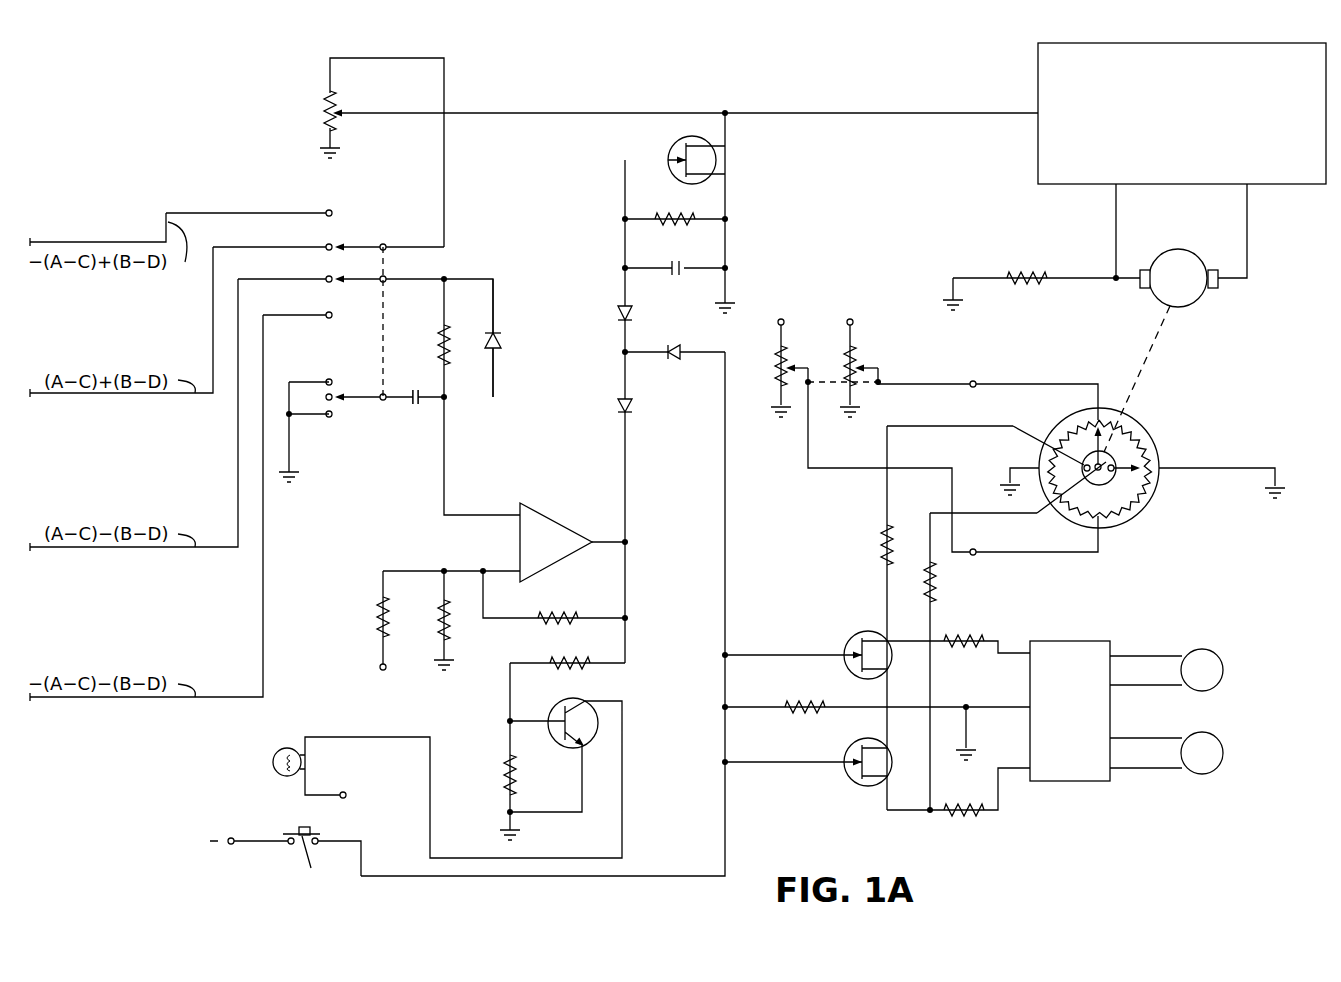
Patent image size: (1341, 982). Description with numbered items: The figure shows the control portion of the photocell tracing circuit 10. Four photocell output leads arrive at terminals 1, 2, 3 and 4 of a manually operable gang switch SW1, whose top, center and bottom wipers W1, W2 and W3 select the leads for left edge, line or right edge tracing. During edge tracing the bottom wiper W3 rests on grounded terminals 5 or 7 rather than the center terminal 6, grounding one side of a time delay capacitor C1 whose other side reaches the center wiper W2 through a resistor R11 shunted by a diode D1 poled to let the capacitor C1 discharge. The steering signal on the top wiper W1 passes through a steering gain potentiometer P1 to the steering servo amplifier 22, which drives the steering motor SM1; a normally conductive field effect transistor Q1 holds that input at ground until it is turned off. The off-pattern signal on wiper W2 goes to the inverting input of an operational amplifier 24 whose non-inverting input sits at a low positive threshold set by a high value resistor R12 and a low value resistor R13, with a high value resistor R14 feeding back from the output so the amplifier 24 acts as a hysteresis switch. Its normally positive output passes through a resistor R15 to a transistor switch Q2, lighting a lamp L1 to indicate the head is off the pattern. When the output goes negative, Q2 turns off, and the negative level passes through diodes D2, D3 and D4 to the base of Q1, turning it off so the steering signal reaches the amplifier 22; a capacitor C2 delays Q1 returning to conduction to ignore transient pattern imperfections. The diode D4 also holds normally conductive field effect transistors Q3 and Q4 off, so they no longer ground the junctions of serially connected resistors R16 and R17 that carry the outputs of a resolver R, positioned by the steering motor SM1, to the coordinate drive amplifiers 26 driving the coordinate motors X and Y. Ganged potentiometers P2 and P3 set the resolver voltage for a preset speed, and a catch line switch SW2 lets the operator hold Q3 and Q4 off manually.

The circuit 10 is at (785, 88).
The steering gain potentiometer P1 is at (326, 108).
The gang switch SW1 is at (361, 324).
The switch terminal 1 is at (325, 211).
The switch terminal 2 is at (326, 246).
The switch terminal 3 is at (326, 278).
The switch terminal 4 is at (326, 313).
The switch terminal 5 is at (326, 380).
The switch terminal 6 is at (325, 397).
The switch terminal 7 is at (326, 418).
The top wiper W1 is at (362, 244).
The center wiper W2 is at (357, 283).
The bottom wiper W3 is at (358, 402).
The resistor R11 is at (440, 342).
The shunt diode D1 is at (504, 340).
The time delay capacitor C1 is at (414, 405).
The field effect transistor Q1 is at (716, 157).
The capacitor C2 is at (675, 262).
The diode D3 is at (617, 313).
The diode D4 is at (679, 358).
The diode D2 is at (615, 410).
The operational amplifier 24 is at (559, 553).
The high value resistor R12 is at (380, 640).
The low value resistor R13 is at (440, 640).
The high value resistor R14 is at (550, 613).
The resistor R15 is at (572, 660).
The transistor switch Q2 is at (557, 706).
The lamp L1 is at (276, 752).
The catch line switch SW2 is at (285, 862).
The steering servo amplifier 22 is at (1185, 132).
The steering motor SM1 is at (1197, 303).
The ganged potentiometer P2 is at (786, 366).
The ganged potentiometer P3 is at (862, 364).
The resolver R is at (1155, 436).
The resistor R16 is at (882, 545).
The field effect transistor Q3 is at (852, 641).
The field effect transistor Q4 is at (856, 770).
The resistor R17 is at (970, 635).
The coordinate drive amplifiers 26 is at (1082, 730).
The coordinate drive motor X is at (1166, 670).
The coordinate drive motor Y is at (1166, 753).